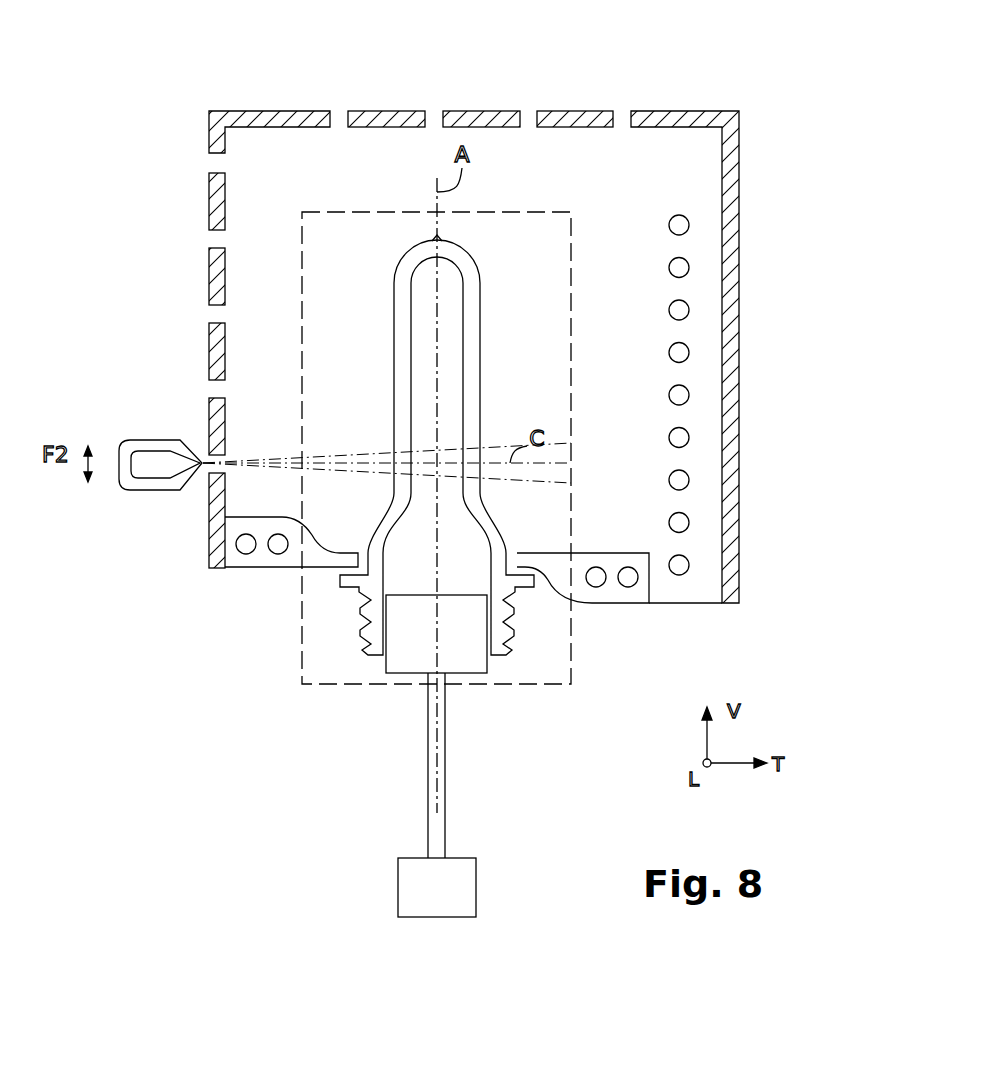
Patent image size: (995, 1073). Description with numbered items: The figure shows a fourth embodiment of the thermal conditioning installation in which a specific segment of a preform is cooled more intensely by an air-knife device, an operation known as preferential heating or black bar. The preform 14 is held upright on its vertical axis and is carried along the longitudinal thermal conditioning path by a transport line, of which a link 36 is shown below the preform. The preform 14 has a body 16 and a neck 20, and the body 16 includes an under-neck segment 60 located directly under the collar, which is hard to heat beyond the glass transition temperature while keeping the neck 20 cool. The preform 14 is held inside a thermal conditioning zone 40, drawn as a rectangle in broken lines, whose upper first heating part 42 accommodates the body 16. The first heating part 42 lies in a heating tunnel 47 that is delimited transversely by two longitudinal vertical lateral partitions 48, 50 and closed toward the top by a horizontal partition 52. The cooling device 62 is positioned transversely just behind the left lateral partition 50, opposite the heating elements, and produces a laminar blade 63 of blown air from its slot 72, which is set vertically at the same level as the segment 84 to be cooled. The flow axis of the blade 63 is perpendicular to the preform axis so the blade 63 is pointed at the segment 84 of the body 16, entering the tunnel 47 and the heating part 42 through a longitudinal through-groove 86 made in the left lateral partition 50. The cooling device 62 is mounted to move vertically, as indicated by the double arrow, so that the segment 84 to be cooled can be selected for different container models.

The heating tunnel 47 is at (662, 107).
The horizontal partition 52 is at (474, 111).
The left lateral partition 50 is at (215, 284).
The lateral partition 48 is at (734, 312).
The thermal conditioning zone 40 is at (538, 212).
The first heating part 42 is at (340, 352).
The body 16 is at (485, 357).
The preform 14 is at (442, 445).
The under-neck segment 60 is at (493, 538).
The neck 20 is at (500, 603).
The link 36 is at (460, 884).
The cooling device 62 is at (133, 450).
The slot 72 is at (202, 460).
The longitudinal through-groove 86 is at (202, 466).
The blade of blown gas 63 is at (338, 455).
The segment to be cooled 84 is at (482, 473).